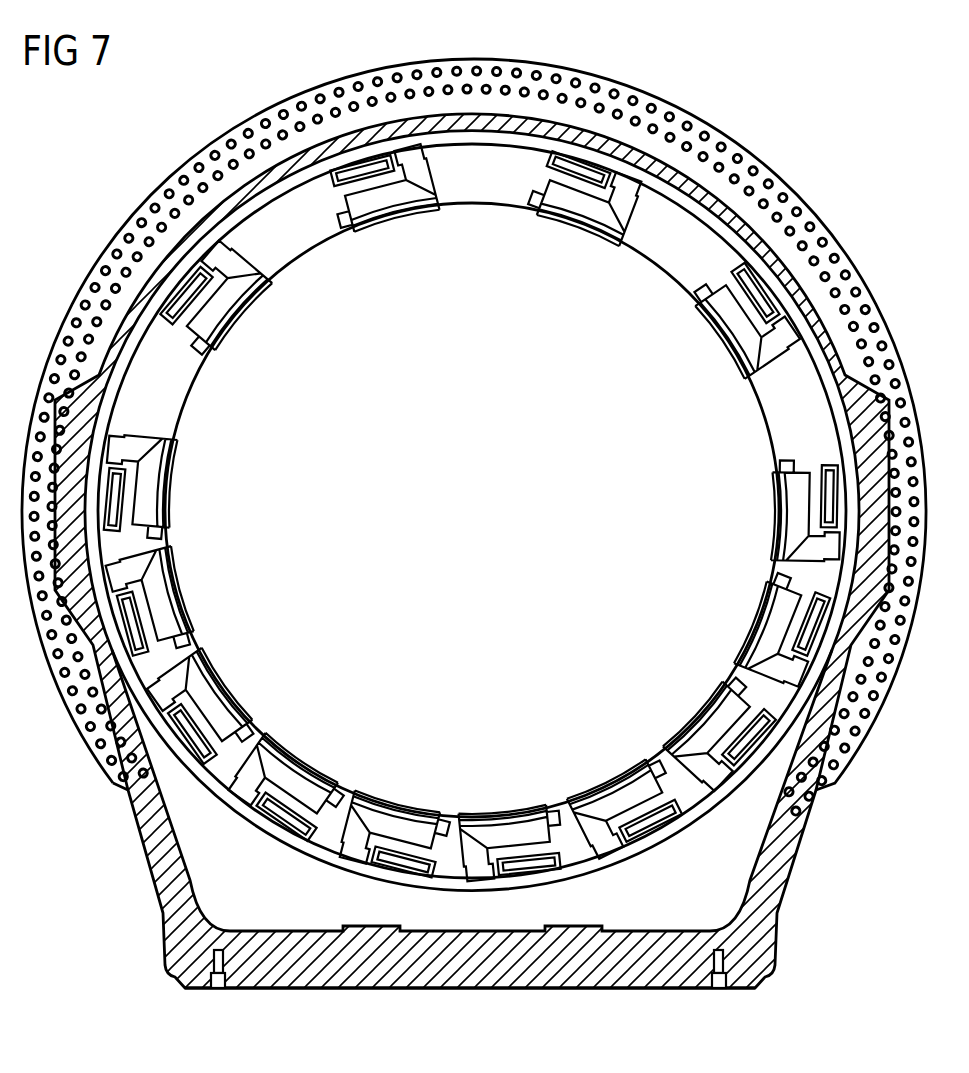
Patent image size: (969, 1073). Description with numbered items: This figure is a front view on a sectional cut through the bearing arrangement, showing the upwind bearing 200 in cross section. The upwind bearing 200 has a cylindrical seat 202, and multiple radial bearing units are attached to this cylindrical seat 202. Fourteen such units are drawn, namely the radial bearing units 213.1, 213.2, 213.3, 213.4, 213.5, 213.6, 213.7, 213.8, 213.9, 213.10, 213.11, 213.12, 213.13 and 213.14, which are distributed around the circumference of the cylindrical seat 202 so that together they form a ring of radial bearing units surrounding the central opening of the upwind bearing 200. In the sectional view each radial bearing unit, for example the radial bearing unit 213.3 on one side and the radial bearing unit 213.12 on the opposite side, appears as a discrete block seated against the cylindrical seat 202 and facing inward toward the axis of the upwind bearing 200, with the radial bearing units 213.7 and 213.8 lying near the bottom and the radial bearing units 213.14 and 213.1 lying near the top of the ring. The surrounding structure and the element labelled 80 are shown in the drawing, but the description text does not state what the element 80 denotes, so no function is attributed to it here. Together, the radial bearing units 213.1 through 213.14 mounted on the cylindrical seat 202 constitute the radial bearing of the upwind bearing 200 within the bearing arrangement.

The support base 80 is at (768, 952).
The upwind bearing 200 is at (499, 197).
The cylindrical seat 202 is at (720, 190).
The radial bearing unit 213.1 is at (579, 242).
The radial bearing unit 213.2 is at (733, 337).
The radial bearing unit 213.3 is at (772, 515).
The radial bearing unit 213.4 is at (725, 673).
The radial bearing unit 213.5 is at (662, 735).
The radial bearing unit 213.6 is at (593, 785).
The radial bearing unit 213.7 is at (503, 810).
The radial bearing unit 213.8 is at (420, 803).
The radial bearing unit 213.9 is at (324, 768).
The radial bearing unit 213.10 is at (260, 720).
The radial bearing unit 213.11 is at (213, 642).
The radial bearing unit 213.12 is at (186, 480).
The radial bearing unit 213.13 is at (257, 302).
The radial bearing unit 213.14 is at (406, 226).